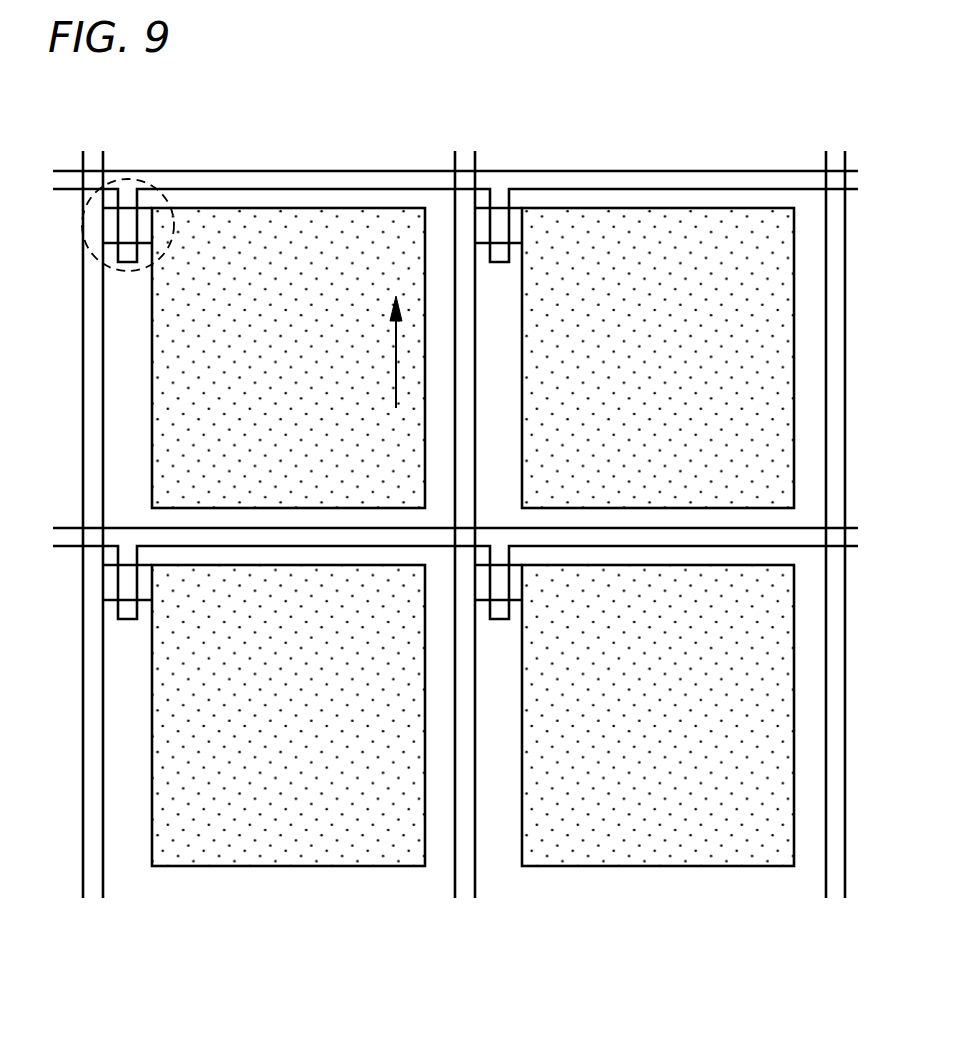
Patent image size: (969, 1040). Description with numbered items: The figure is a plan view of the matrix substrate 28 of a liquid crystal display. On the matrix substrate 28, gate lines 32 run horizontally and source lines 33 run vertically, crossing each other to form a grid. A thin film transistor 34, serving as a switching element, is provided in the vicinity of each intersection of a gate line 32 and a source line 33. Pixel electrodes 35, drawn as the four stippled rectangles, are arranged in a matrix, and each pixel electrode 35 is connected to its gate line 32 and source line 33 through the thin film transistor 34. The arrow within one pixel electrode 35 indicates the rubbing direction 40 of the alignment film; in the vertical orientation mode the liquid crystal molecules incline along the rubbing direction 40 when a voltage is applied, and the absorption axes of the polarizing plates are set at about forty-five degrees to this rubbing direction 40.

The matrix substrate 28 is at (455, 536).
The gate line 32 is at (292, 178).
The source line 33 is at (95, 160).
The thin film transistor 34 is at (150, 187).
The pixel electrode 35 is at (335, 218).
The rubbing direction 40 is at (395, 345).